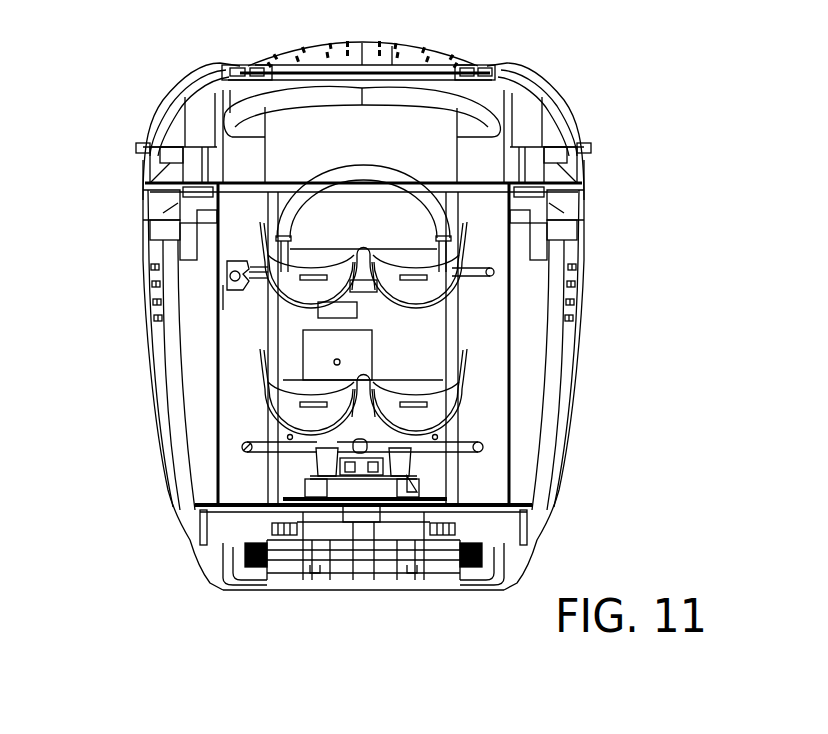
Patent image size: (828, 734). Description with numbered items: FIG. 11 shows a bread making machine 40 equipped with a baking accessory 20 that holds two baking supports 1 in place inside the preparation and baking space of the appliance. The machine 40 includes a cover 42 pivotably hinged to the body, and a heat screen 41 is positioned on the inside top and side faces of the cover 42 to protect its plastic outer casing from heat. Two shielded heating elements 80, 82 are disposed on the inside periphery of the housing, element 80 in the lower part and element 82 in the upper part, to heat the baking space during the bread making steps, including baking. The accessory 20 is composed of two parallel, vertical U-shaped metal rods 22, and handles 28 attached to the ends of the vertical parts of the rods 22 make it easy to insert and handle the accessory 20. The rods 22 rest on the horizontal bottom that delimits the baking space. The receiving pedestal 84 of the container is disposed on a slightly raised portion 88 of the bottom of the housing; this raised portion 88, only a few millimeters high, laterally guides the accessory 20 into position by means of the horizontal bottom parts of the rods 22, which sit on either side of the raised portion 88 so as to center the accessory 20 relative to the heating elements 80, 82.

The support 1 is at (487, 232).
The accessory 20 is at (268, 322).
The U-shaped metal rod 22 is at (285, 345).
The handle 28 is at (355, 182).
The bread making machine 40 is at (592, 330).
The heat screen 41 is at (228, 108).
The cover 42 is at (518, 113).
The heating element 80 is at (243, 448).
The heating element 82 is at (229, 275).
The pedestal 84 is at (316, 462).
The raised portion 88 is at (437, 492).